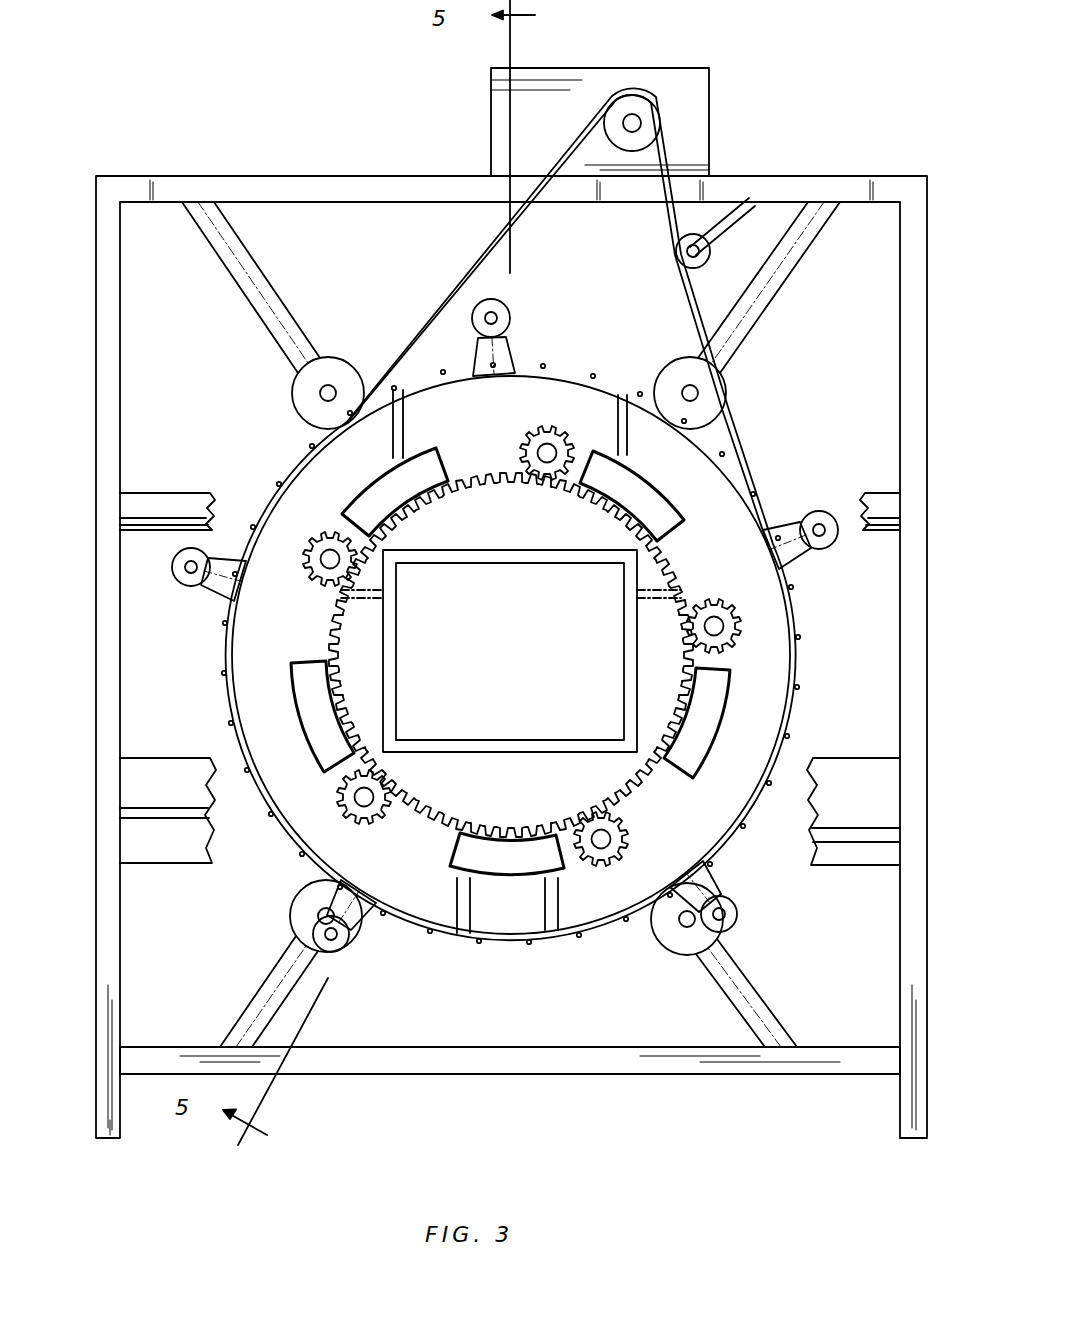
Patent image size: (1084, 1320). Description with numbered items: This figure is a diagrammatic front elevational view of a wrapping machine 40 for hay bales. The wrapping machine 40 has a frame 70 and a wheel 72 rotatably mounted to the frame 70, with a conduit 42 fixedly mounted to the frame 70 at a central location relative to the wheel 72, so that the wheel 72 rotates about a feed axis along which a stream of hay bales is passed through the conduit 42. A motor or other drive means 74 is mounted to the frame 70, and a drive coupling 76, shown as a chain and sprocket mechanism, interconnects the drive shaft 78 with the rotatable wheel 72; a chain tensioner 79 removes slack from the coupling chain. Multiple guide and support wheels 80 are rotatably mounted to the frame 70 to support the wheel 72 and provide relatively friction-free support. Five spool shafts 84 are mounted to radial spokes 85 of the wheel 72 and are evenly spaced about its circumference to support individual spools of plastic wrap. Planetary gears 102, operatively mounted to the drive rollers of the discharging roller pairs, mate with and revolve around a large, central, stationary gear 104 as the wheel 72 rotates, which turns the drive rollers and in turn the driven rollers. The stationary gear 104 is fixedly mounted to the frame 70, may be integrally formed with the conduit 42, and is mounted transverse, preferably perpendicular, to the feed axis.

The wrapping machine 40 is at (822, 1098).
The conduit 42 is at (563, 567).
The frame 70 is at (288, 192).
The wheel 72 is at (797, 660).
The drive means 74 is at (690, 118).
The drive coupling 76 is at (742, 450).
The drive shaft 78 is at (632, 118).
The chain tensioner 79 is at (712, 235).
The guide and support wheels 80 is at (308, 402).
The spool shafts 84 is at (497, 315).
The radial spokes 85 is at (497, 358).
The planetary gears 102 is at (528, 432).
The stationary gear 104 is at (367, 662).